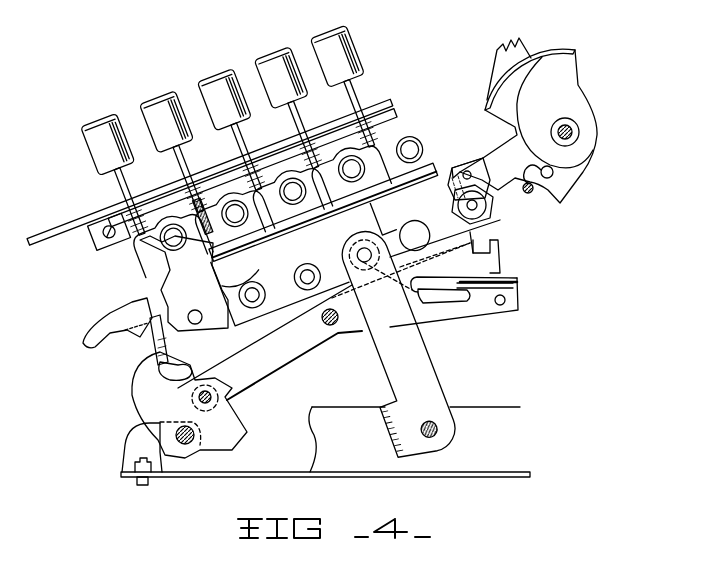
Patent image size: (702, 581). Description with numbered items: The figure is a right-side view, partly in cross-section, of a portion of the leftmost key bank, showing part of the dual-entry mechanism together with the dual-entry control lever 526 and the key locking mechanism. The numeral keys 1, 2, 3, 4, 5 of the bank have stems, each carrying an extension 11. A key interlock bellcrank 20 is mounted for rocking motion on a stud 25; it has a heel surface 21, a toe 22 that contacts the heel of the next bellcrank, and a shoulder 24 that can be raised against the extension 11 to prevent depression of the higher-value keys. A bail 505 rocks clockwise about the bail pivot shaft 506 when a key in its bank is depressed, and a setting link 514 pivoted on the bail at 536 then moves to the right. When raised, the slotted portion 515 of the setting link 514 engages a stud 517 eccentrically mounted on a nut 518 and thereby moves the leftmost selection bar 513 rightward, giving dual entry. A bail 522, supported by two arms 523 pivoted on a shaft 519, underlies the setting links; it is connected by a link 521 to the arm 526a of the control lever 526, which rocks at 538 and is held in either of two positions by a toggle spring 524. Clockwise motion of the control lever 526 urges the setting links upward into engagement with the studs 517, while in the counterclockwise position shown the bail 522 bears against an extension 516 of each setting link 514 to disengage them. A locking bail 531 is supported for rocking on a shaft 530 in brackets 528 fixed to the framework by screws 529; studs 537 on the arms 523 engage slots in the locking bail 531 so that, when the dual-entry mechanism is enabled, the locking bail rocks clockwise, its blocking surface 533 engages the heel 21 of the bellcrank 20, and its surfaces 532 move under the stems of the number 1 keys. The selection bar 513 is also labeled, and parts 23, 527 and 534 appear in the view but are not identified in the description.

The number 1 key 1 is at (83, 120).
The numeral key 2 is at (145, 98).
The numeral key 3 is at (200, 78).
The numeral key 4 is at (255, 58).
The numeral key 5 is at (310, 40).
The extension of the key stems 11 is at (123, 218).
The key interlock bellcrank 20 is at (184, 283).
The heel surface 21 is at (157, 297).
The toe 22 is at (311, 275).
The mounting plate 23 is at (128, 250).
The shoulder 24 is at (204, 232).
The stud 25 is at (173, 228).
The bail 505 is at (417, 378).
The bail pivot shaft 506 is at (447, 432).
The selection bar 513 is at (408, 213).
The setting link 514 is at (437, 267).
The slotted portion 515 is at (510, 247).
The extension 516 is at (460, 303).
The stud 517 is at (477, 210).
The nut 518 is at (453, 202).
The shaft 519 is at (334, 326).
The link 521 is at (500, 270).
The bail 522 is at (517, 287).
The arms 523 is at (270, 368).
The toggle spring 524 is at (530, 167).
The dual-entry control lever 526 is at (523, 92).
The arm of the control lever 526a is at (479, 162).
The base bracket 527 is at (325, 442).
The brackets 528 is at (142, 438).
The screws 529 is at (140, 490).
The shaft 530 is at (190, 443).
The locking bail 531 is at (147, 382).
The surfaces 532 is at (84, 333).
The blocking surface 533 is at (133, 323).
The notch 534 is at (181, 366).
The pivot 536 is at (363, 266).
The studs 537 is at (223, 402).
The pivot 538 is at (570, 137).